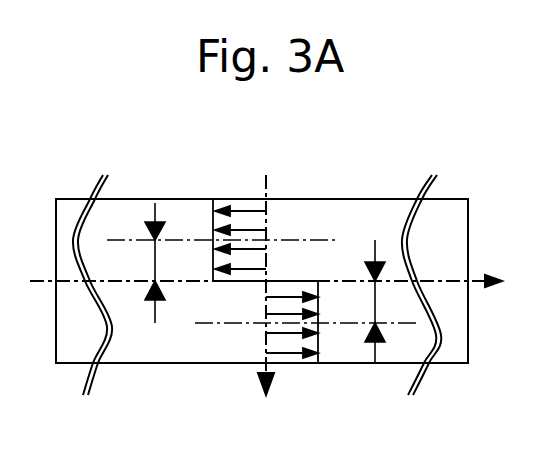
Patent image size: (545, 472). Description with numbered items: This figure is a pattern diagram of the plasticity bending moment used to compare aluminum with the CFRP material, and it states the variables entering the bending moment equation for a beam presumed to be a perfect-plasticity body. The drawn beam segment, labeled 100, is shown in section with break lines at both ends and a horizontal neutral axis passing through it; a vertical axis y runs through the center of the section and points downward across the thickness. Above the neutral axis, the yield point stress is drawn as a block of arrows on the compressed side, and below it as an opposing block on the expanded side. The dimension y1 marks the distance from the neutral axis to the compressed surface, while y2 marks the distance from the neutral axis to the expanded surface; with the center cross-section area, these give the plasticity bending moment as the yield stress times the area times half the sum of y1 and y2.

The structural member (plate) 100 is at (445, 363).
The y axis (thickness direction) y is at (265, 299).
The distance from the neutral axis to the compressed surface y1 is at (221, 263).
The distance from the neutral axis to the expanded surface y2 is at (306, 301).